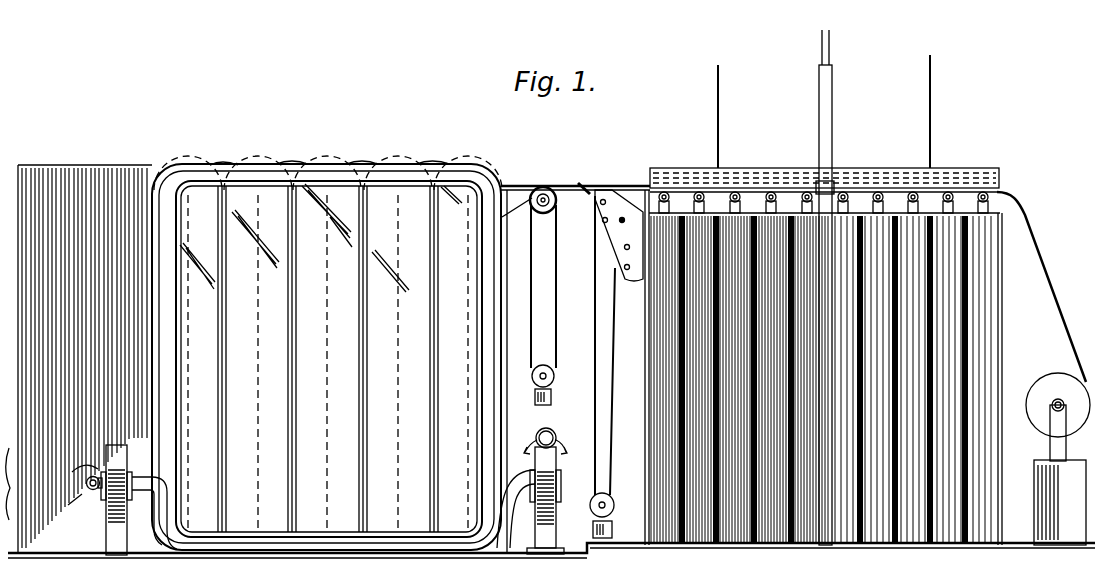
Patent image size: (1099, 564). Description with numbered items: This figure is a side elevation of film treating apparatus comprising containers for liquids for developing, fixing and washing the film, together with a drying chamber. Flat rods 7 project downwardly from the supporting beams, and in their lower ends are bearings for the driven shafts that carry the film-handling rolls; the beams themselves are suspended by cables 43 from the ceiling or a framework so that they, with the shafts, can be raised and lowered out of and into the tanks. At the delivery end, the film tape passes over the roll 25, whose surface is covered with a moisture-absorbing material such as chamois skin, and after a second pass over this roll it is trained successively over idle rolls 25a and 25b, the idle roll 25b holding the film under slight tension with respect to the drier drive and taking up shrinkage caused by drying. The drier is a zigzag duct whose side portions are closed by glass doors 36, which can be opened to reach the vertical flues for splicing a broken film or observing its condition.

The glass doors 36 is at (250, 200).
The idle roll 25a is at (562, 186).
The roll 25 is at (590, 195).
The idle roll 25b is at (555, 377).
The flat rods 7 is at (677, 194).
The cables 43 is at (720, 145).